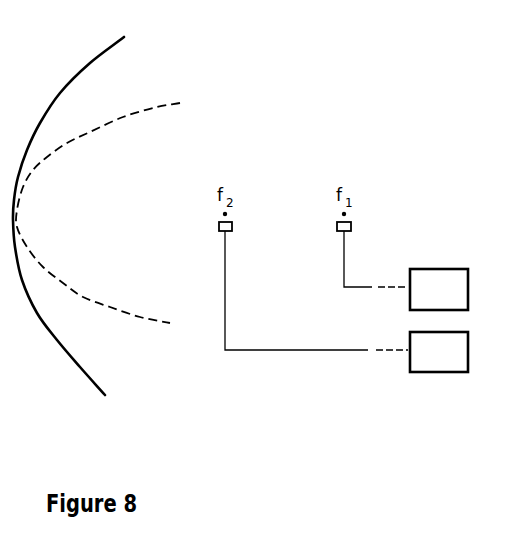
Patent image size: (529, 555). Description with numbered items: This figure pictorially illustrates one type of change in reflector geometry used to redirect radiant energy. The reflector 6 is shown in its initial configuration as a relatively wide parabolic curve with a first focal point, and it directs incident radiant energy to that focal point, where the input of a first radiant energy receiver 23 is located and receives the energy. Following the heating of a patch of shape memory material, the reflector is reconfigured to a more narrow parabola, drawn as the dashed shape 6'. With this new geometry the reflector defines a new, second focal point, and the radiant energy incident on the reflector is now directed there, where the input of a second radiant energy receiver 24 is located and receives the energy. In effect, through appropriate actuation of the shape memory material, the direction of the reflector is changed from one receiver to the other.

The reflector 6 is at (68, 205).
The reflector reconfigured shape 6' is at (100, 184).
The first radiant energy receiver 23 is at (470, 283).
The second radiant energy receiver 24 is at (470, 347).